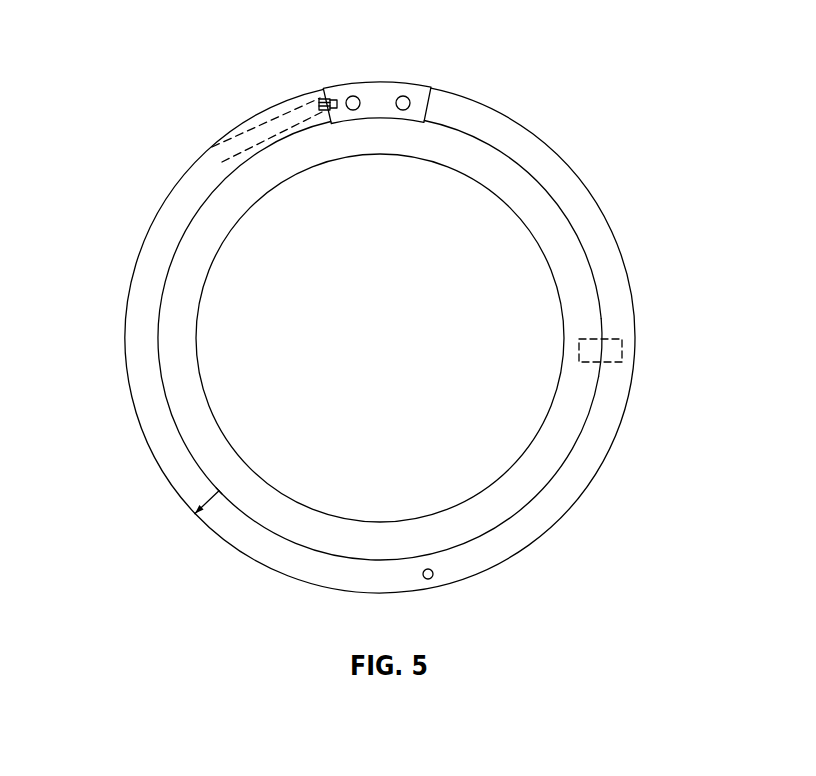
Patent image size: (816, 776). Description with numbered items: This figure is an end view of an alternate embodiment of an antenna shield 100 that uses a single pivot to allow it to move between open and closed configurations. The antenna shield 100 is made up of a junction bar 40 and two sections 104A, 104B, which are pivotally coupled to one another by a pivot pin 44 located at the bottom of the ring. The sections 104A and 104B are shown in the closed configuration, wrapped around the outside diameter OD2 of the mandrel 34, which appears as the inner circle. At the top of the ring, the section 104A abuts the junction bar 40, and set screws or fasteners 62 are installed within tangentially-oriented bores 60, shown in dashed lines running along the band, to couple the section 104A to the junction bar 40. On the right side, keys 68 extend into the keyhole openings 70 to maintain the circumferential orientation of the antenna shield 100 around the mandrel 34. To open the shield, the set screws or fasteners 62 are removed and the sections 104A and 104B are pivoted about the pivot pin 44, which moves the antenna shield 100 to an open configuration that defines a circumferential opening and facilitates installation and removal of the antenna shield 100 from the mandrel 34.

The antenna shield 100 is at (395, 334).
The junction bar 40 is at (405, 84).
The pivot pin 44 is at (426, 580).
The tangentially-oriented bores 60 is at (257, 132).
The set screws or fasteners 62 is at (325, 95).
The keys 68 is at (601, 352).
The keyhole openings 70 is at (593, 333).
The mandrel 34 is at (205, 452).
The section 104A is at (151, 254).
The section 104B is at (627, 402).
The outside diameter of the mandrel OD2 is at (566, 206).